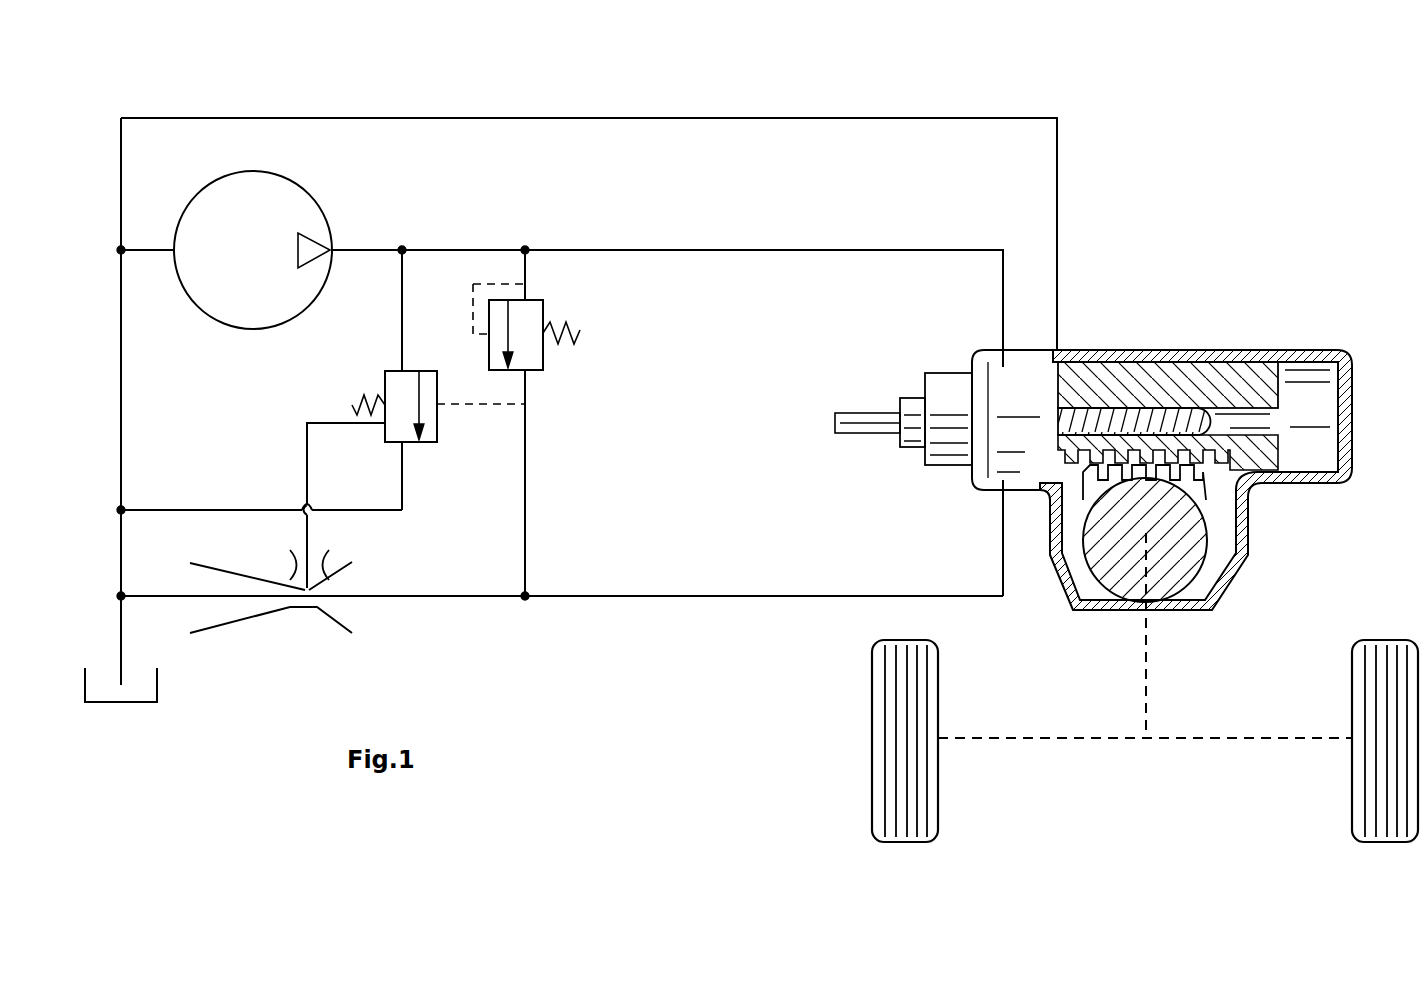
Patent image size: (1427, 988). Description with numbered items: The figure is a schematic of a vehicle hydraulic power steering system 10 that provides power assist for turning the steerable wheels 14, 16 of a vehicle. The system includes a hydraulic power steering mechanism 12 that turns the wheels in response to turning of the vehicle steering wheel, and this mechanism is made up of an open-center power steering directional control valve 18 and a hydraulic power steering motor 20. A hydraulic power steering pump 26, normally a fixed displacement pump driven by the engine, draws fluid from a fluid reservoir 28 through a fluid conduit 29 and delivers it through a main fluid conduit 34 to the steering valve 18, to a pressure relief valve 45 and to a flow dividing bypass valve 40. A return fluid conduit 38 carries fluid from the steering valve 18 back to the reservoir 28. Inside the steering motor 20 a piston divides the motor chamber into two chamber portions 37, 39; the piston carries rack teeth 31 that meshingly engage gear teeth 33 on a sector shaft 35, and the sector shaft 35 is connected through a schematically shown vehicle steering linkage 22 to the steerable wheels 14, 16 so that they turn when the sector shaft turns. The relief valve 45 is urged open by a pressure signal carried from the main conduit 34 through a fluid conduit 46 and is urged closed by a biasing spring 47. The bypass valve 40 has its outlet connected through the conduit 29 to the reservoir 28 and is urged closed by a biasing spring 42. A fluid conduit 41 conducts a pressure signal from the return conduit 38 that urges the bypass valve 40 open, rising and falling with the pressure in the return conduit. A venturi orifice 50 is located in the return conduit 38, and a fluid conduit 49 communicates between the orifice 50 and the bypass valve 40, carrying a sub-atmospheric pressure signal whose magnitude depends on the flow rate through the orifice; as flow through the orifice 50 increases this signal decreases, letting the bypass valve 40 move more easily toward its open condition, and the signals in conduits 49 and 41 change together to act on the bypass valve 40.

The vehicle hydraulic power steering system 10 is at (525, 107).
The hydraulic power steering mechanism 12 is at (1208, 317).
The steerable wheel 14 is at (905, 788).
The steerable wheel 16 is at (1380, 775).
The power steering directional control valve 18 is at (1007, 393).
The hydraulic power steering motor 20 is at (1315, 378).
The vehicle steering linkage 22 is at (1147, 673).
The hydraulic power steering pump 26 is at (278, 188).
The fluid reservoir 28 is at (130, 690).
The fluid conduit 29 is at (121, 382).
The rack teeth 31 is at (1225, 465).
The gear teeth 33 is at (1222, 470).
The main fluid conduit 34 is at (440, 250).
The sector shaft 35 is at (1120, 537).
The chamber portion 37 is at (1063, 473).
The return fluid conduit 38 is at (627, 596).
The chamber portion 39 is at (1315, 433).
The flow dividing bypass valve 40 is at (433, 423).
The fluid conduit 41 is at (478, 400).
The biasing spring 42 is at (357, 395).
The pressure relief valve 45 is at (532, 312).
The fluid conduit 46 is at (473, 300).
The biasing spring 47 is at (580, 330).
The fluid conduit 49 is at (310, 462).
The orifice 50 is at (293, 610).